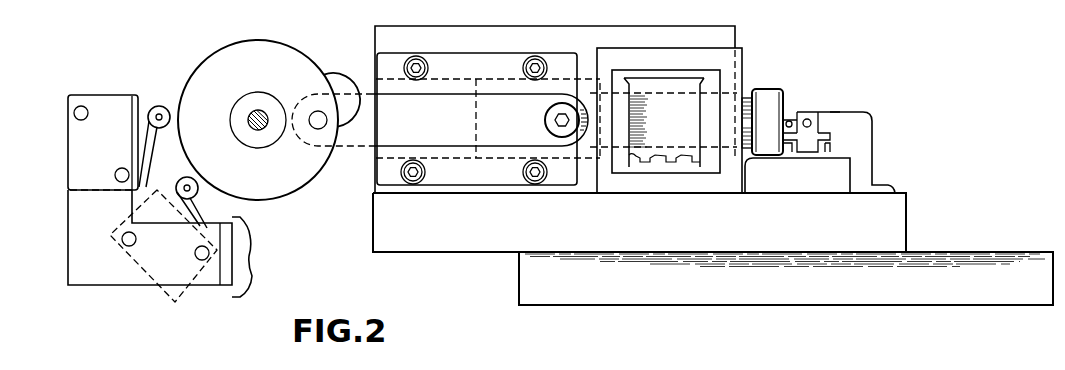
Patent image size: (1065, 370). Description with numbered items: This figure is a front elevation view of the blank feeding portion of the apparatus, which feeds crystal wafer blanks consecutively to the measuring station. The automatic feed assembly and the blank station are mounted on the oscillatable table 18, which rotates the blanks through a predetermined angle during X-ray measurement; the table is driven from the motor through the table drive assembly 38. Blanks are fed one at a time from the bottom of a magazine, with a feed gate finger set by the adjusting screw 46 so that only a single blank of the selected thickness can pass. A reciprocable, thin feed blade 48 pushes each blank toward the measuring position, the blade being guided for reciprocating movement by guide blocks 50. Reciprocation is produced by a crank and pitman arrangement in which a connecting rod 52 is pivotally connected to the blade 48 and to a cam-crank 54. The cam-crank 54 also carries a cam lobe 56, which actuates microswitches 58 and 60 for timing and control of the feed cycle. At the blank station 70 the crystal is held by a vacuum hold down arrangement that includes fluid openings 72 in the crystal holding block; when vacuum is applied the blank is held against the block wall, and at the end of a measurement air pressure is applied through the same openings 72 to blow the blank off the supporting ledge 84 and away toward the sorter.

The oscillatable table 18 is at (966, 252).
The table drive assembly 38 is at (906, 217).
The adjusting screw 46 is at (777, 88).
The feed blade 48 is at (676, 128).
The guide blocks 50 is at (585, 55).
The connecting rod 52 is at (438, 126).
The cam-crank 54 is at (311, 47).
The cam lobe 56 is at (356, 73).
The microswitch 58 is at (178, 186).
The microswitch 60 is at (129, 95).
The blank station 70 is at (805, 98).
The fluid openings 72 is at (810, 118).
The supporting ledge 84 is at (828, 162).